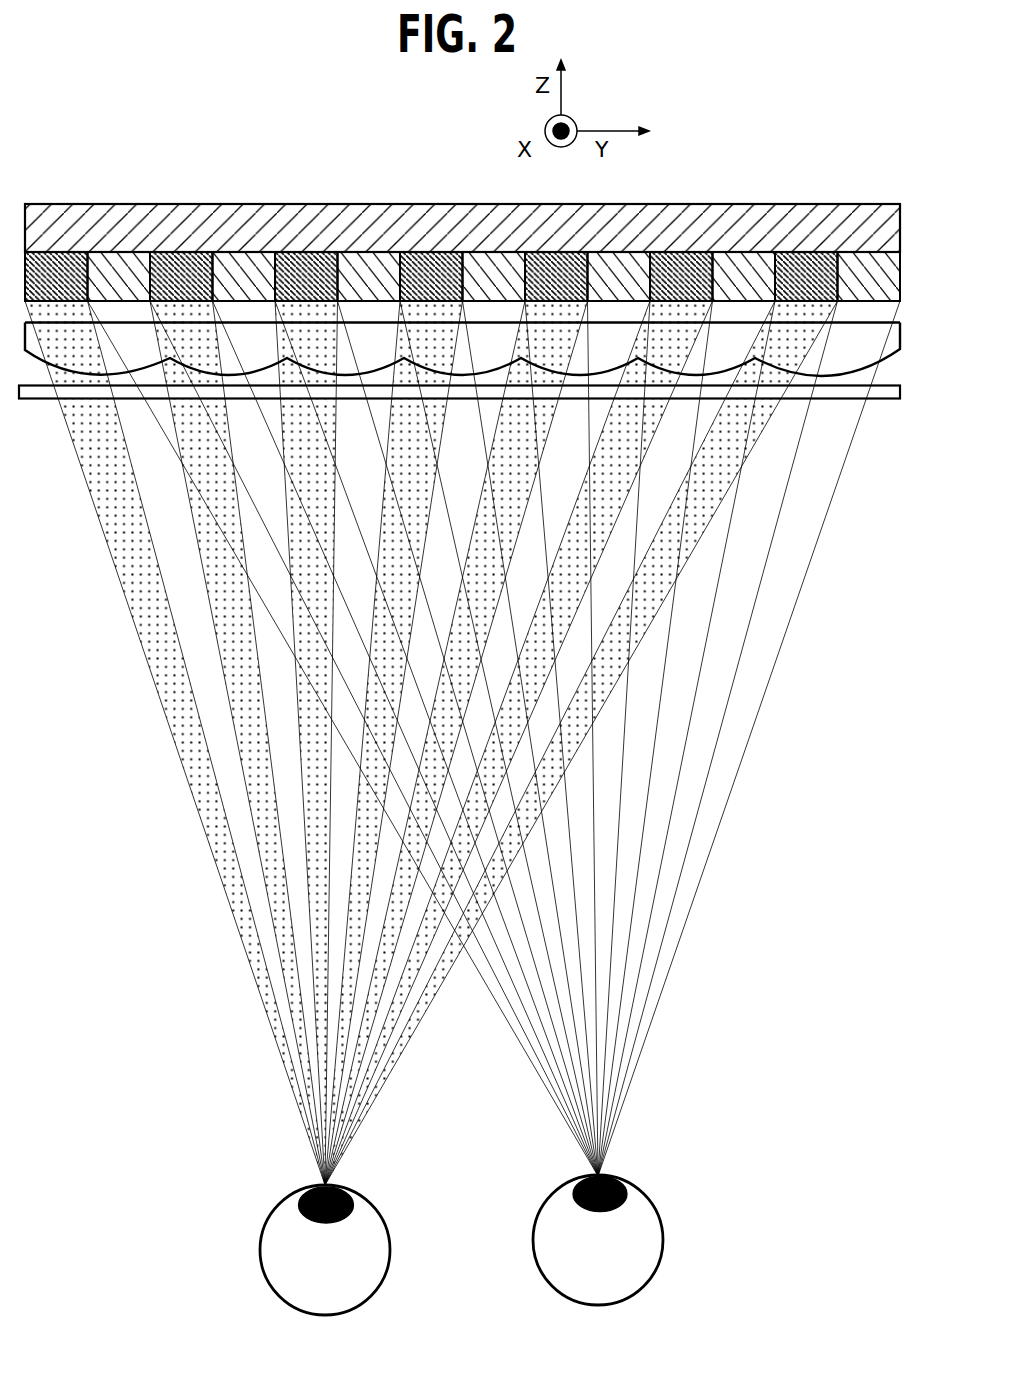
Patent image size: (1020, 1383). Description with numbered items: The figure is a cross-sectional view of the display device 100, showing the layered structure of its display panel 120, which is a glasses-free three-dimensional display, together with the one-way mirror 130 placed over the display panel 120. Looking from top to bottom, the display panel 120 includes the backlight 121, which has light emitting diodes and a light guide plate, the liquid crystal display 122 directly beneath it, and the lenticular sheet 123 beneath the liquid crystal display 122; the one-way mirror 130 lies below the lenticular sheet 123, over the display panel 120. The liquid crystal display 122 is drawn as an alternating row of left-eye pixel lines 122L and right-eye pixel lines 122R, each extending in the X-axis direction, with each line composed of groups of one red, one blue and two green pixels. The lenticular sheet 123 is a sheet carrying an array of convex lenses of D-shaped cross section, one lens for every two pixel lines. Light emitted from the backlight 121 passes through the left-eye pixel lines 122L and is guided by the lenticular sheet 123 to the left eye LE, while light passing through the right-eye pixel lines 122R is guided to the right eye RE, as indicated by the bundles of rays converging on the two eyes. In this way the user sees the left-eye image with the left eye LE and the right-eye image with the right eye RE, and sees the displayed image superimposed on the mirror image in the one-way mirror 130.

The display device 100 is at (795, 134).
The display panel 120 is at (172, 203).
The backlight 121 is at (615, 203).
The liquid crystal display 122 is at (905, 268).
The left-eye pixel lines 122L is at (317, 252).
The right-eye pixel lines 122R is at (368, 252).
The lenticular sheet 123 is at (900, 343).
The one-way mirror 130 is at (880, 400).
The left eye LE is at (347, 1187).
The right eye RE is at (627, 1188).